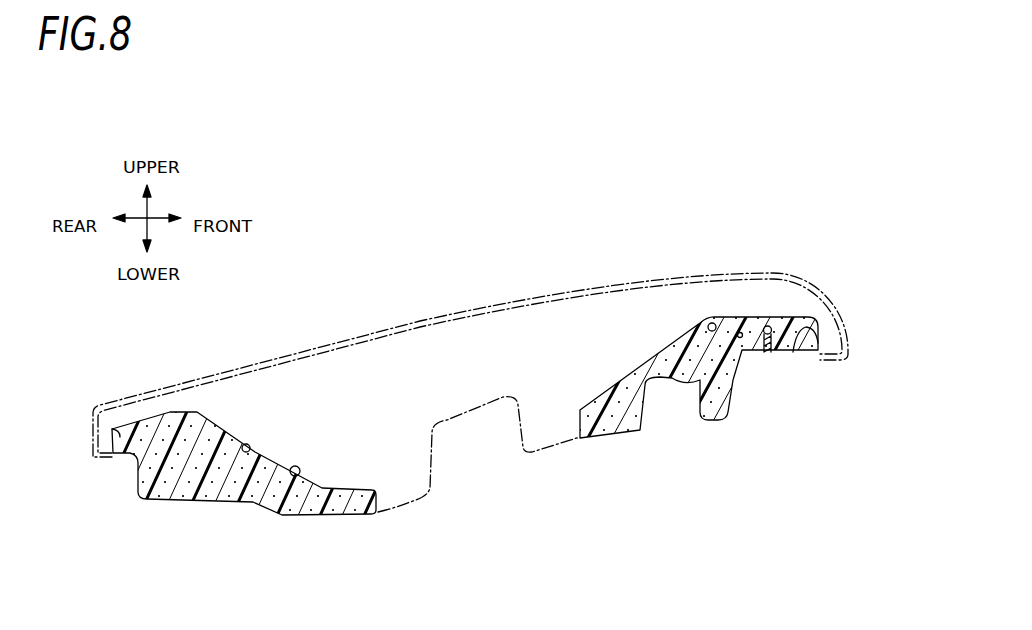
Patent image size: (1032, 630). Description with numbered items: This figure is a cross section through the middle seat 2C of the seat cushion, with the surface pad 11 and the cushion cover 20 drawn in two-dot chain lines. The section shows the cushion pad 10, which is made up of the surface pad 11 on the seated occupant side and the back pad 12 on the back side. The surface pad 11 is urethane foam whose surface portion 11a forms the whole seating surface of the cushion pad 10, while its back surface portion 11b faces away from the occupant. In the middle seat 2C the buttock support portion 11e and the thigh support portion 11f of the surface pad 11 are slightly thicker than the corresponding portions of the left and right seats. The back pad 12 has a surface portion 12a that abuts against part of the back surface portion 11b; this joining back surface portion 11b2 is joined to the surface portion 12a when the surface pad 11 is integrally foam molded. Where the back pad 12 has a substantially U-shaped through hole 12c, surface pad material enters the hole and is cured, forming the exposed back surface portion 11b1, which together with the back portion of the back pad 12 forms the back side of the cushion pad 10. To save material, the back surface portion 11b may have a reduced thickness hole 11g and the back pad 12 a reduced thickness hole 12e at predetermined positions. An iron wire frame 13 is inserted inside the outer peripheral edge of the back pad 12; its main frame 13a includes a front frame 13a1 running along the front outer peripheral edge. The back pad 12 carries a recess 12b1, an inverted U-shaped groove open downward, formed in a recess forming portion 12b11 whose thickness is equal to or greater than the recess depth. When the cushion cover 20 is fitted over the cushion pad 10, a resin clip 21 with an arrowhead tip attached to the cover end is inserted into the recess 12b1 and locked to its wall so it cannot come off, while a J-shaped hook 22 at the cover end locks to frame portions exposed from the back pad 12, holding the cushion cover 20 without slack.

The cushion pad 10 is at (468, 234).
The surface pad 11 is at (560, 313).
The surface portion 11a is at (402, 333).
The back surface portion 11b is at (479, 478).
The exposed back surface portion 11b1 is at (410, 505).
The joining back surface portion 11b2 is at (250, 451).
The buttock support portion 11e is at (355, 380).
The thigh support portion 11f is at (600, 312).
The reduced thickness hole 11g is at (478, 413).
The back pad 12 is at (607, 423).
The surface portion 12a is at (295, 476).
The recess 12b1 is at (768, 352).
The recess forming portion 12b11 is at (770, 325).
The through hole 12c is at (385, 514).
The reduced thickness hole 12e is at (670, 379).
The frame 13 is at (816, 267).
The main frame 13a is at (792, 267).
The front frame 13a1 is at (751, 323).
The cushion cover 20 is at (640, 278).
The clip 21 is at (807, 352).
The hook 22 is at (783, 267).
The middle seat 2C is at (217, 373).